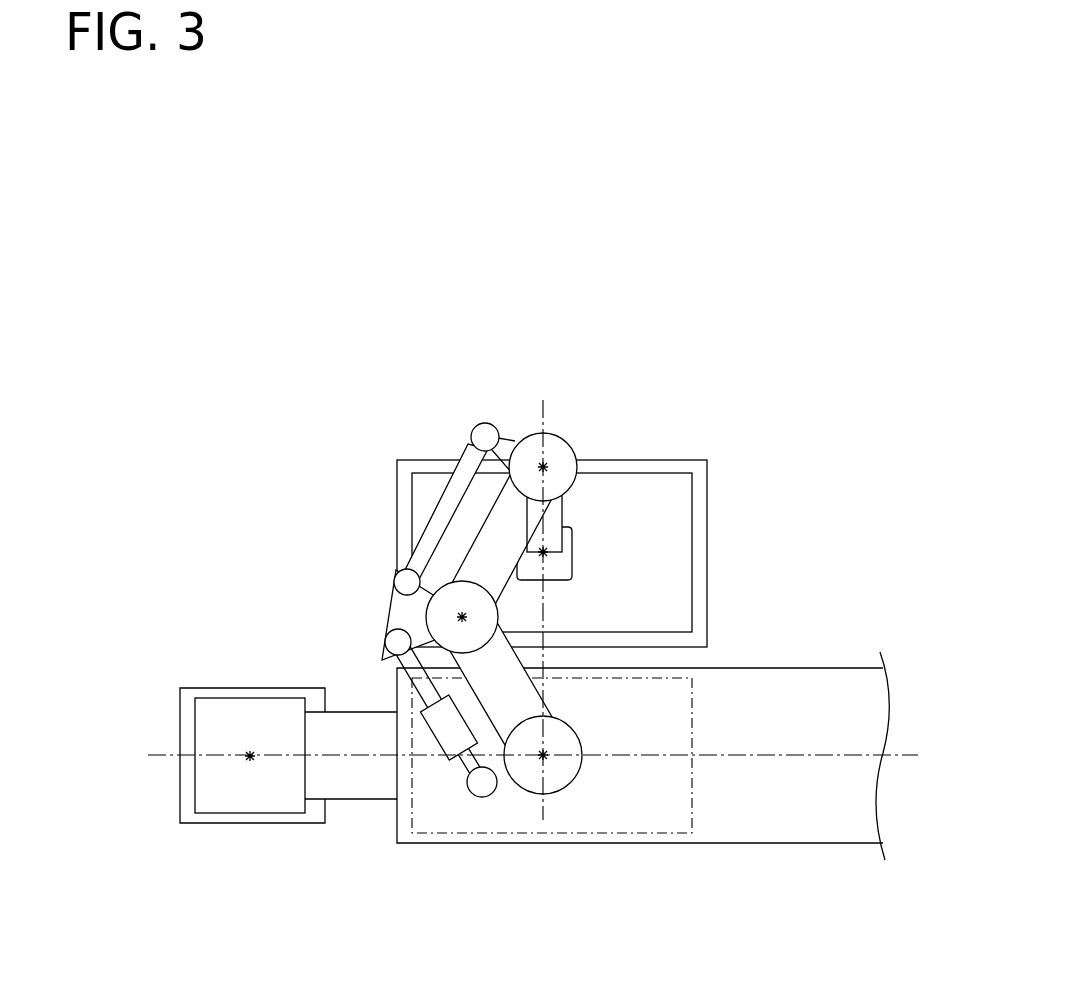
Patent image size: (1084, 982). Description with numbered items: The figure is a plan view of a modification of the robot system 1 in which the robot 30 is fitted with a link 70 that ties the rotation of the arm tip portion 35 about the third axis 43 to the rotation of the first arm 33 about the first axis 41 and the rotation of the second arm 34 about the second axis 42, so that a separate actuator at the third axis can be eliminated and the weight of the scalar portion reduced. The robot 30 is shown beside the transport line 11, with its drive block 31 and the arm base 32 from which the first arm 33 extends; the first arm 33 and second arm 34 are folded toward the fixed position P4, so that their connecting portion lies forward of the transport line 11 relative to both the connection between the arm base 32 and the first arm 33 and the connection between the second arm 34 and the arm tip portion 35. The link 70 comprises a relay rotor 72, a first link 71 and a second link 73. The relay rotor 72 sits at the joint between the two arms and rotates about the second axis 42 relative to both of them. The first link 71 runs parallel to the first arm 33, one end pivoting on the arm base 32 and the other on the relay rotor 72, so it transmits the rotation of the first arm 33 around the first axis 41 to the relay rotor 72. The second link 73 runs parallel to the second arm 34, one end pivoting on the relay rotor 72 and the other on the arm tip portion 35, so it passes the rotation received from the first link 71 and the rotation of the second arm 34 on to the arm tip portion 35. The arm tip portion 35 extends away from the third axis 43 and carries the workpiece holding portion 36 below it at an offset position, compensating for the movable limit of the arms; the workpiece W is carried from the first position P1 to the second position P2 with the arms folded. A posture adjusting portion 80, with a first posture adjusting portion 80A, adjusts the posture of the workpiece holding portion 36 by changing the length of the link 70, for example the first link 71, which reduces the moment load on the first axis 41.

The robot system 1 is at (162, 438).
The transport line 11 is at (912, 754).
The robot 30 is at (272, 730).
The motor 31 is at (222, 803).
The arm base 32 is at (347, 787).
The first arm 33 is at (520, 693).
The second arm 34 is at (497, 540).
The arm tip portion 35 is at (555, 522).
The workpiece holding portion 36 is at (567, 552).
The first axis 41 is at (547, 758).
The second axis 42 is at (460, 608).
The third axis 43 is at (548, 464).
The link 70 is at (518, 402).
The first link 71 is at (458, 770).
The relay rotor 72 is at (390, 610).
The second link 73 is at (445, 511).
The posture adjusting portion 80 is at (424, 790).
The first posture adjusting portion 80A is at (433, 742).
The first position P1 is at (543, 755).
The second position P2 is at (545, 555).
The fixed position P4 is at (250, 752).
The workpiece W is at (692, 490).